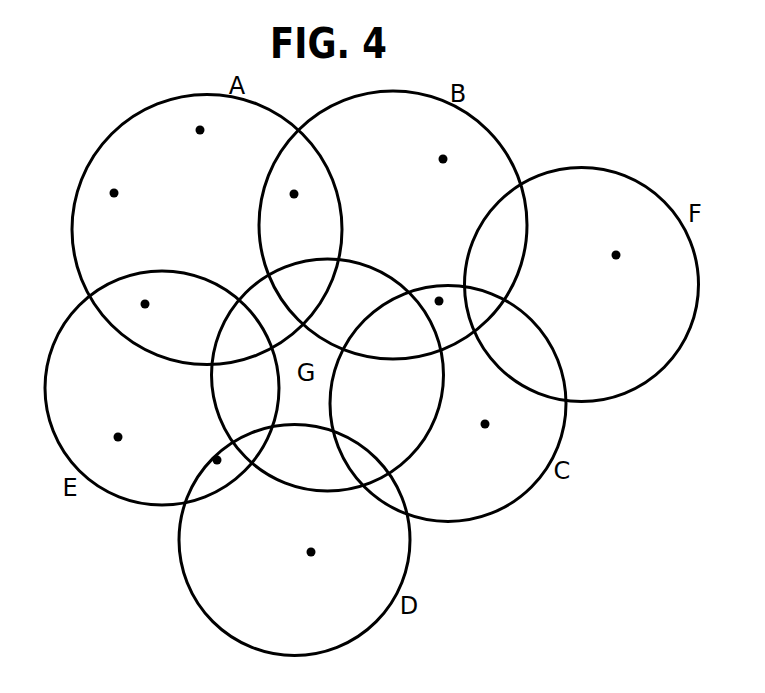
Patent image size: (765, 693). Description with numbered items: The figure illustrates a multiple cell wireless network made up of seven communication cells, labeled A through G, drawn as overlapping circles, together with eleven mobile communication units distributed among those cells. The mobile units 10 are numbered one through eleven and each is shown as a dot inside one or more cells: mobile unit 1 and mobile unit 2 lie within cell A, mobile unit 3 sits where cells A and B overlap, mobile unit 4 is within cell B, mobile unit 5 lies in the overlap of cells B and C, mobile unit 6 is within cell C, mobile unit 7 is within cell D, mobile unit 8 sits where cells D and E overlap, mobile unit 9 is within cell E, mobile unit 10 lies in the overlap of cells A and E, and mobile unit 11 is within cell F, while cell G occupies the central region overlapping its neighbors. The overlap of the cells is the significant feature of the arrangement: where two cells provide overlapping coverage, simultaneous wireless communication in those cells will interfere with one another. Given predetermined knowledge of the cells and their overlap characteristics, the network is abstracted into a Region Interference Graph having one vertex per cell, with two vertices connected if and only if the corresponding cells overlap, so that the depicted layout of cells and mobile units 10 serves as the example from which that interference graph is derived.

The mobile unit 1 is at (113, 180).
The mobile unit 2 is at (192, 118).
The mobile unit 3 is at (296, 180).
The mobile unit 4 is at (440, 144).
The mobile unit 5 is at (446, 316).
The mobile unit 6 is at (494, 433).
The mobile unit 7 is at (321, 564).
The mobile unit 8 is at (211, 474).
The mobile unit 9 is at (128, 427).
The mobile units 10 is at (160, 317).
The mobile unit 11 is at (616, 243).